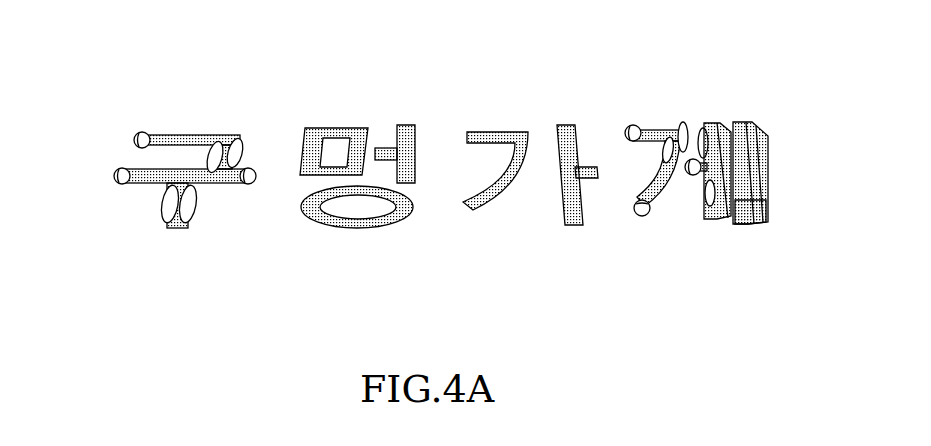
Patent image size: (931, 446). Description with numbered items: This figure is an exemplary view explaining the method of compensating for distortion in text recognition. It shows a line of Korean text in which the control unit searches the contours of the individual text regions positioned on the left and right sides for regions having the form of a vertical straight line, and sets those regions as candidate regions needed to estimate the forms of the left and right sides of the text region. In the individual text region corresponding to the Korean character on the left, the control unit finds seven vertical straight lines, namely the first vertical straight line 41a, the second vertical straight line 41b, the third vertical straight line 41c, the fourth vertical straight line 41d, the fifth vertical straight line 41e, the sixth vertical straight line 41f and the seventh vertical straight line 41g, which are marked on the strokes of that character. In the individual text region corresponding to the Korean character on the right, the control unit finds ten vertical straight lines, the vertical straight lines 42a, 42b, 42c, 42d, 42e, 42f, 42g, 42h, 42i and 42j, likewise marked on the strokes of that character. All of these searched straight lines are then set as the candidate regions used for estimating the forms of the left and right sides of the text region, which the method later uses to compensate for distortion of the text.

The vertical straight line 41a is at (114, 176).
The vertical straight line 41b is at (144, 132).
The vertical straight line 41c is at (208, 145).
The vertical straight line 41d is at (247, 138).
The vertical straight line 41e is at (248, 185).
The vertical straight line 41f is at (161, 210).
The vertical straight line 41g is at (202, 223).
The vertical straight line 42a is at (625, 131).
The vertical straight line 42b is at (656, 128).
The vertical straight line 42c is at (679, 123).
The vertical straight line 42d is at (700, 128).
The vertical straight line 42e is at (719, 122).
The vertical straight line 42f is at (744, 226).
The vertical straight line 42g is at (762, 156).
The vertical straight line 42h is at (638, 217).
The vertical straight line 42i is at (688, 177).
The vertical straight line 42j is at (708, 208).